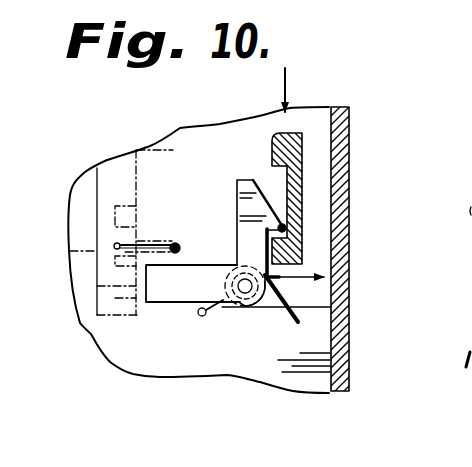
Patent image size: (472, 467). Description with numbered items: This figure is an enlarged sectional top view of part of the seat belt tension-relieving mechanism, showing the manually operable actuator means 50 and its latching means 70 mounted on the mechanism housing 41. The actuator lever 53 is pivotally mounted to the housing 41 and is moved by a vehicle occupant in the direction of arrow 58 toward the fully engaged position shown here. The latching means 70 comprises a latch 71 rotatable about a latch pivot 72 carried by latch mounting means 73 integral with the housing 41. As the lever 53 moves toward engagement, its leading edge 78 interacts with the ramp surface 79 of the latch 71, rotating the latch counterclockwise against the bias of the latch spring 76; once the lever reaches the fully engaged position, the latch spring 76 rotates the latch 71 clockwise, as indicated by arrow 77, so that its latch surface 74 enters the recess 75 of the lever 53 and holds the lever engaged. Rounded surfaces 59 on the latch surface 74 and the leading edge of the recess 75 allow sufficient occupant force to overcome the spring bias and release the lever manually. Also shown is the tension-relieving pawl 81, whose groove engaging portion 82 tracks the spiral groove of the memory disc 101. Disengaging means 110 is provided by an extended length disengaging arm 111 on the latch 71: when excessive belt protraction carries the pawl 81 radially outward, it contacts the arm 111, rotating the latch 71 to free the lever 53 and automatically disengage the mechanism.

The mechanism housing 41 is at (349, 358).
The manually operable actuator means 50 is at (306, 156).
The actuator lever 53 is at (300, 128).
The arrow 58 is at (289, 90).
The rounded surfaces 59 is at (284, 225).
The latching means 70 is at (218, 320).
The latch 71 is at (250, 238).
The latch pivot 72 is at (247, 293).
The latch mounting means 73 is at (312, 302).
The latch surface 74 is at (279, 250).
The recess 75 is at (286, 190).
The latch spring 76 is at (200, 314).
The arrow 77 is at (247, 168).
The leading edge 78 is at (282, 280).
The ramp surface 79 is at (263, 190).
The tension-relieving pawl 81 is at (172, 244).
The groove engaging portion 82 is at (115, 243).
The memory disc 101 is at (115, 165).
The disengaging means 110 is at (146, 286).
The extended length disengaging arm 111 is at (160, 300).